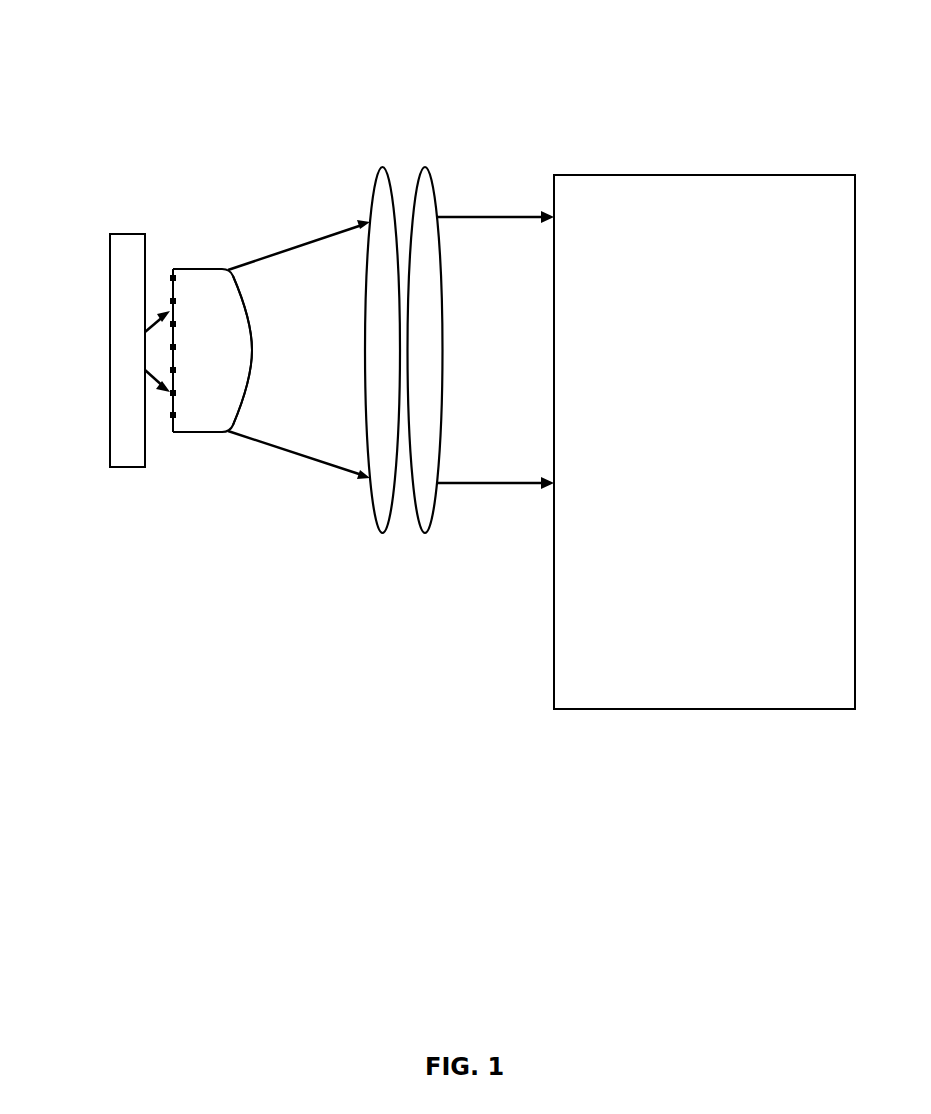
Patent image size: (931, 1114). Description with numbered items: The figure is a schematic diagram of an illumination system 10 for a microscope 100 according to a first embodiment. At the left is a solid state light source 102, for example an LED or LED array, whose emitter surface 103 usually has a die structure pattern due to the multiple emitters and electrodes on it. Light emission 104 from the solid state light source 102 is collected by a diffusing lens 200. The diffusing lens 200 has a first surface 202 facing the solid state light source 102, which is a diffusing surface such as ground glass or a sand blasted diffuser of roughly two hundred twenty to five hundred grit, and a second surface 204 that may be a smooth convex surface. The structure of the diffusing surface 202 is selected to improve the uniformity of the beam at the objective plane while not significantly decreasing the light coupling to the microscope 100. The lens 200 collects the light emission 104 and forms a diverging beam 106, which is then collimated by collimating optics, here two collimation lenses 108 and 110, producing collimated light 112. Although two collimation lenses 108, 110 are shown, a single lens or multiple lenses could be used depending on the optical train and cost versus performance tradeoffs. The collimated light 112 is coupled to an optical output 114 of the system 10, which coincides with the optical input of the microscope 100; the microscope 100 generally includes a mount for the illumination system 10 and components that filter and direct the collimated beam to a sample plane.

The illumination system 10 is at (92, 73).
The microscope 100 is at (722, 453).
The solid state light source 102 is at (128, 417).
The emitter surface 103 is at (147, 245).
The light emission 104 is at (153, 350).
The diverging beam 106 is at (358, 359).
The collimation lens 108 is at (379, 530).
The collimation lens 110 is at (425, 530).
The collimated light 112 is at (503, 233).
The optical output 114 is at (552, 486).
The diffusing lens 200 is at (219, 370).
The first surface 202 is at (172, 430).
The second surface 204 is at (252, 340).